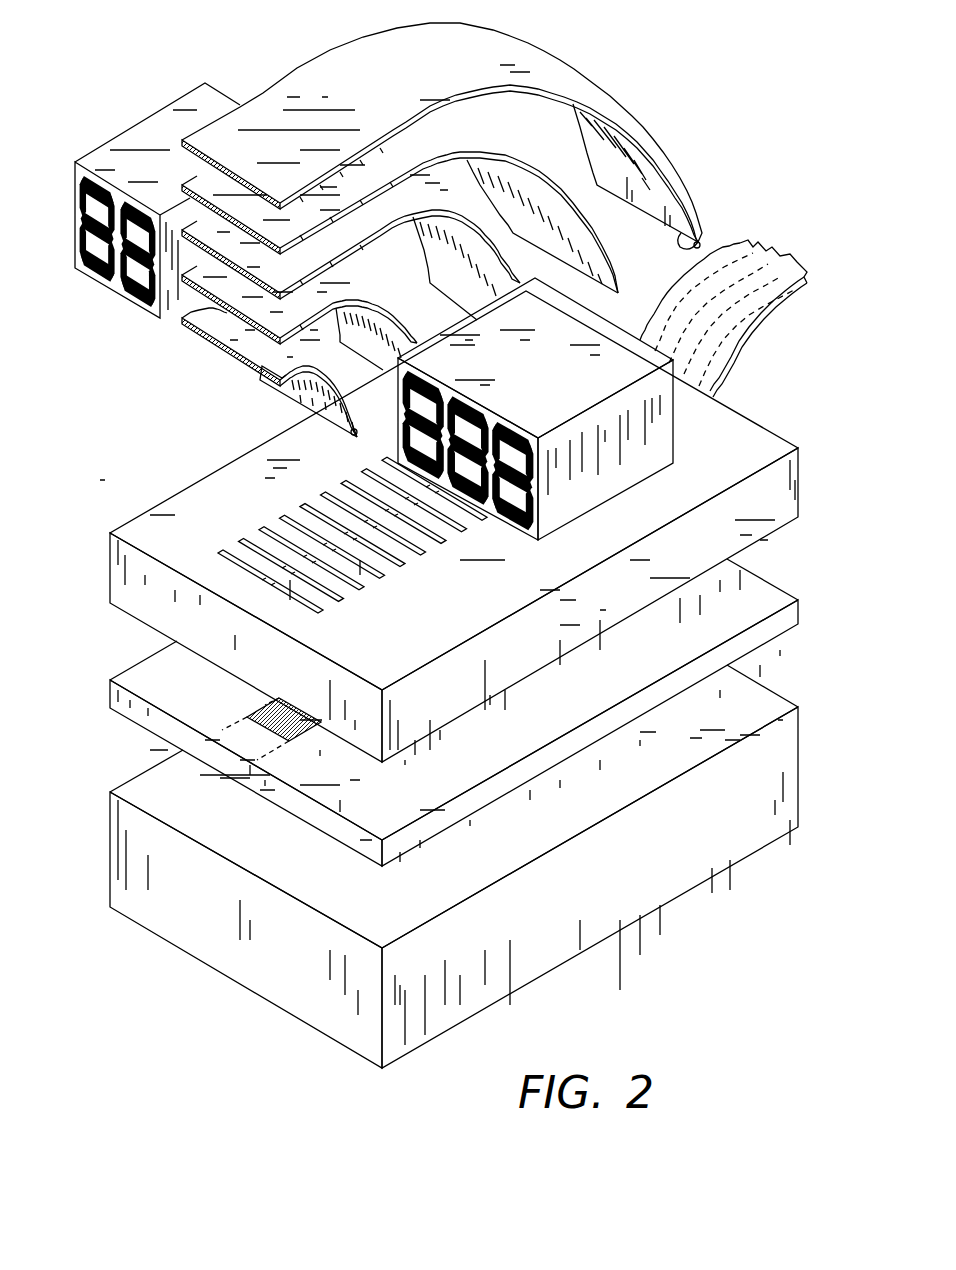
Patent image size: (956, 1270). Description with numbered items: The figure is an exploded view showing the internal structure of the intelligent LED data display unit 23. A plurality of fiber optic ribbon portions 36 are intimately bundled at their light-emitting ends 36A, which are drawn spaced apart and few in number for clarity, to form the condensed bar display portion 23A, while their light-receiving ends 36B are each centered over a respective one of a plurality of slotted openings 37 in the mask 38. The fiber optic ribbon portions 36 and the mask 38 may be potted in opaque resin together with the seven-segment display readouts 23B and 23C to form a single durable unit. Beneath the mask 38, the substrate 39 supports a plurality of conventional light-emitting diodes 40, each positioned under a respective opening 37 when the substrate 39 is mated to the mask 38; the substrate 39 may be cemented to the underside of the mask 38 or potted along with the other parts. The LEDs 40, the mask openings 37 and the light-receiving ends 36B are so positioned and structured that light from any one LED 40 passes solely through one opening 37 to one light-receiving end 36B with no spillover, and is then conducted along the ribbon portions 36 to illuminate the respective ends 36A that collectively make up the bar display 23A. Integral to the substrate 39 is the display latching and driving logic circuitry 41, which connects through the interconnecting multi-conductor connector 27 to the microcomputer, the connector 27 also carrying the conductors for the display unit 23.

The intelligent LED data display unit 23 is at (685, 86).
The condensed bar display portion 23A is at (165, 343).
The seven-segment display readout 23B is at (148, 122).
The seven-segment display readout 23C is at (673, 440).
The interconnecting multi-conductor connector 27 is at (745, 355).
The fiber optic ribbon portion 36 is at (540, 60).
The light-emitting end 36A is at (213, 312).
The light-receiving end 36B is at (690, 245).
The slotted opening 37 is at (360, 593).
The mask 38 is at (145, 508).
The substrate 39 is at (143, 660).
The light-emitting diode 40 is at (300, 735).
The display latching and driving logic circuitry 41 is at (640, 920).